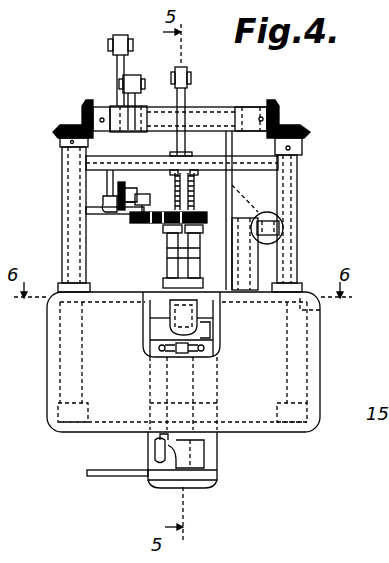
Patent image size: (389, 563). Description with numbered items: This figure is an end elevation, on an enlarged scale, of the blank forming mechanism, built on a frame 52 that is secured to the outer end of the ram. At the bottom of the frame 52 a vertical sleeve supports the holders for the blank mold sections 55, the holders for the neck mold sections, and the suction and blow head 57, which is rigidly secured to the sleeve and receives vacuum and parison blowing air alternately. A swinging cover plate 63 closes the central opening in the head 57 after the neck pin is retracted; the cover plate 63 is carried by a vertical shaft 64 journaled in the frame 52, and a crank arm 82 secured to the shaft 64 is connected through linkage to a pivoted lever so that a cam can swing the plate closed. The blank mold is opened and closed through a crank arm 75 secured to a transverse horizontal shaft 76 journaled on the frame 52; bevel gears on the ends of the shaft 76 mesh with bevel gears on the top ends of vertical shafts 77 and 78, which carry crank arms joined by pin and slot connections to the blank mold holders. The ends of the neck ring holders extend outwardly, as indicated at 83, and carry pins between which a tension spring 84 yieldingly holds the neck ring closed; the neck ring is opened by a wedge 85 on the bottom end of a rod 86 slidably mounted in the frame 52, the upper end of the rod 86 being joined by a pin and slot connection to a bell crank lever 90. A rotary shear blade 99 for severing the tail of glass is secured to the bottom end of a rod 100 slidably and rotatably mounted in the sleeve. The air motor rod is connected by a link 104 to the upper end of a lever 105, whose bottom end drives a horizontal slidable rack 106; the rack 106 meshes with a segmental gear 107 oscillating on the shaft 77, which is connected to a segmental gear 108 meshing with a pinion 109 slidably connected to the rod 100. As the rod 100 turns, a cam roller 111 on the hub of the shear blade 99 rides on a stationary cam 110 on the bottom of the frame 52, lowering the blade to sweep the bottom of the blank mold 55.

The link 104 is at (112, 40).
The lever 105 is at (118, 68).
The crank arm 75 is at (136, 110).
The transverse horizontal shaft 76 is at (212, 112).
The bell crank lever 90 is at (188, 85).
The vertical shaft 64 is at (243, 188).
The vertical shaft 77 is at (70, 250).
The vertical shaft 78 is at (292, 250).
The segmental gear 107 is at (105, 193).
The segmental gear 108 is at (137, 215).
The horizontal slidable rack 106 is at (131, 202).
The pinion 109 is at (188, 214).
The rod 86 is at (188, 246).
The crank arm 82 is at (249, 196).
The frame 52 is at (318, 345).
The swinging cover plate 63 is at (318, 323).
The suction and blow head 57 is at (152, 322).
The wedge 85 is at (212, 330).
The ends of neck ring holders 83 is at (162, 353).
The tension spring 84 is at (185, 356).
The rod 100 is at (180, 452).
The stationary cam 110 is at (158, 446).
The cam roller 111 is at (172, 466).
The blank mold sections 55 is at (150, 487).
The rotary shear blade 99 is at (106, 478).